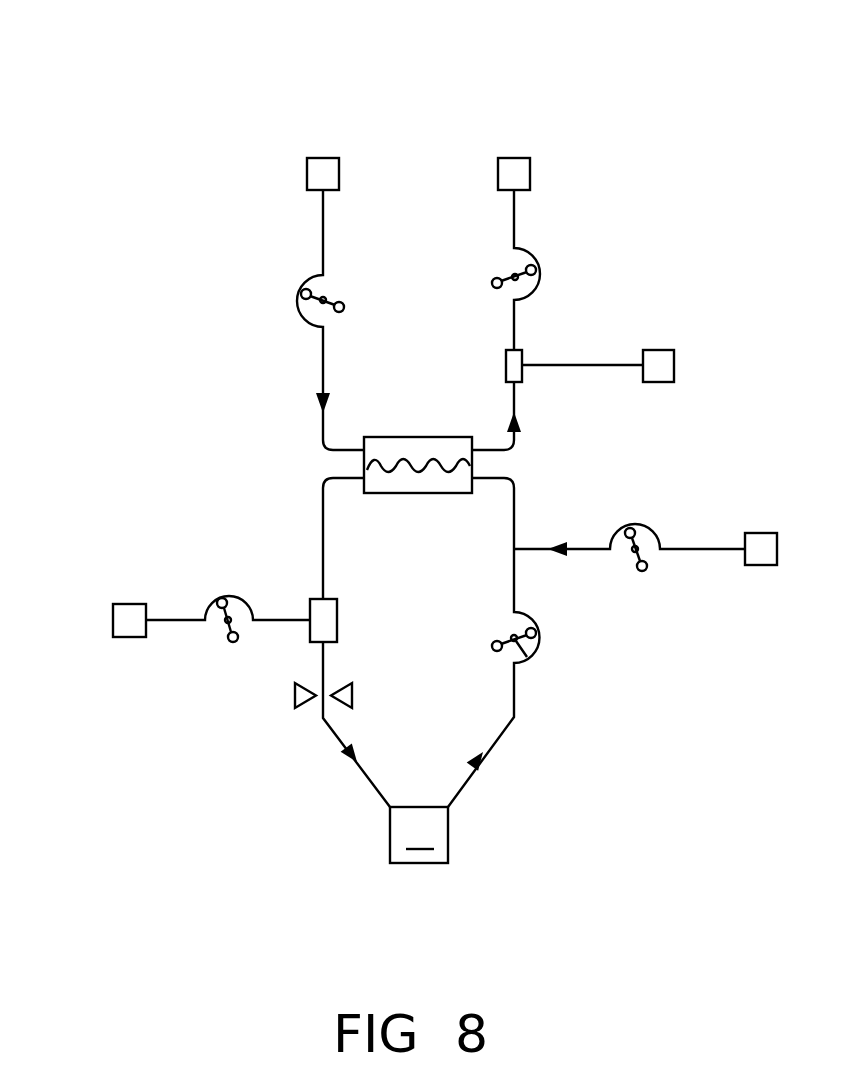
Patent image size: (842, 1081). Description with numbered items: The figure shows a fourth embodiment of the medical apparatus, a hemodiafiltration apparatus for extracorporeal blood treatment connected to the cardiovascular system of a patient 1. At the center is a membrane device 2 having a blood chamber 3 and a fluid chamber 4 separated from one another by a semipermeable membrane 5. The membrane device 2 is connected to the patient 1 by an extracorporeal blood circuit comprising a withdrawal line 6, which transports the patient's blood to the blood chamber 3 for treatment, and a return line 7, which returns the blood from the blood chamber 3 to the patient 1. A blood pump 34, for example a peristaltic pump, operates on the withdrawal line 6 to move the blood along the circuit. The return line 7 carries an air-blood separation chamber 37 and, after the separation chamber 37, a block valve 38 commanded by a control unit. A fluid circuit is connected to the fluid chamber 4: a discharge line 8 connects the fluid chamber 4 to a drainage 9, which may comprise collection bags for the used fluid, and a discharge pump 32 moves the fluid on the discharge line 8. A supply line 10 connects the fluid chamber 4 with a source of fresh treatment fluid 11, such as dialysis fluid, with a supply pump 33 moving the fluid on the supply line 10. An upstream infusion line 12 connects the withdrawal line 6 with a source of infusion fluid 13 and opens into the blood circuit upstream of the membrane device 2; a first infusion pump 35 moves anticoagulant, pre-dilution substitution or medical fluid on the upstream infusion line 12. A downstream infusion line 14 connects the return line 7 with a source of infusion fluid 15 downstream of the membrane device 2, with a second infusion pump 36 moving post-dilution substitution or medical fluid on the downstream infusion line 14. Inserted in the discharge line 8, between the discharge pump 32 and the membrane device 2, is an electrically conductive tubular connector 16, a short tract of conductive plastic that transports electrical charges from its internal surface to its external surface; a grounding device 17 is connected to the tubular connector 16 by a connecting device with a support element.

The patient 1 is at (419, 835).
The membrane device 2 is at (441, 402).
The blood chamber 3 is at (382, 483).
The fluid chamber 4 is at (390, 450).
The semipermeable membrane 5 is at (425, 463).
The withdrawal line 6 is at (514, 713).
The return line 7 is at (323, 525).
The discharge line 8 is at (514, 215).
The drainage 9 is at (515, 170).
The supply line 10 is at (323, 233).
The source of fresh treatment fluid 11 is at (325, 172).
The upstream infusion line 12 is at (697, 549).
The source of infusion fluid 13 is at (753, 540).
The downstream infusion line 14 is at (178, 618).
The source of infusion fluid 15 is at (122, 617).
The tubular connector 16 is at (522, 350).
The grounding device 17 is at (663, 355).
The discharge pump 32 is at (494, 280).
The supply pump 33 is at (342, 304).
The blood pump 34 is at (527, 657).
The first infusion pump 35 is at (644, 570).
The second infusion pump 36 is at (231, 641).
The air-blood separation chamber 37 is at (316, 630).
The block valve 38 is at (300, 705).